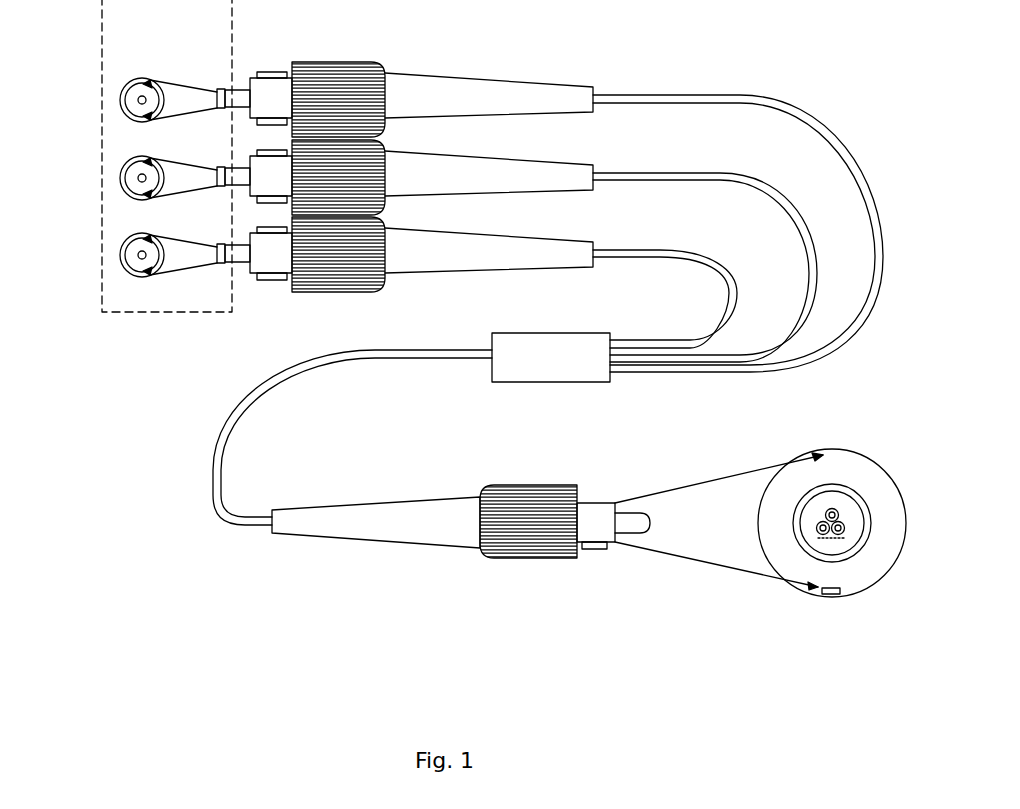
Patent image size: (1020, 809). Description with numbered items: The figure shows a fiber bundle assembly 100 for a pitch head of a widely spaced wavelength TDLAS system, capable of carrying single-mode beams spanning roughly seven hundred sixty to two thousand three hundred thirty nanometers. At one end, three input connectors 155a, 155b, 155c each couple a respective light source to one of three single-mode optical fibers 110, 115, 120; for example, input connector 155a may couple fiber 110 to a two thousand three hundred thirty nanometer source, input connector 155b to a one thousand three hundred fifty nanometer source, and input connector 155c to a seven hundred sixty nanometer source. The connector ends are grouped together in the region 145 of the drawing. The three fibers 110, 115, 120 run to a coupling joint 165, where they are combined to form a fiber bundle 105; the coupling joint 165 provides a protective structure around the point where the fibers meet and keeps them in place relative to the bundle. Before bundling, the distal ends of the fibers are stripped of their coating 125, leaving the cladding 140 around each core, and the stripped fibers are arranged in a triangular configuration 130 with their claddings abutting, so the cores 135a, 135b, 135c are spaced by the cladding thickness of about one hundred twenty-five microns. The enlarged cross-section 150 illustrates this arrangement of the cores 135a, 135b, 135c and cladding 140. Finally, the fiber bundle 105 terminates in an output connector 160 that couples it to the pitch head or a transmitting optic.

The fiber bundle assembly 100 is at (647, 645).
The fiber bundle 105 is at (433, 352).
The single-mode optical fiber 110 is at (742, 100).
The single-mode optical fiber 115 is at (640, 175).
The single-mode optical fiber 120 is at (680, 256).
The coating 125 is at (170, 88).
The triangular configuration 130 is at (832, 541).
The core 135a is at (137, 101).
The core 135b is at (124, 185).
The core 135c is at (124, 258).
The cladding 140 is at (144, 82).
The connector end group 145 is at (153, 24).
The multi-fiber connector cross-section 150 is at (767, 593).
The input connector 155a is at (390, 70).
The input connector 155b is at (440, 143).
The input connector 155c is at (440, 223).
The output connector 160 is at (532, 559).
The coupling joint 165 is at (558, 361).